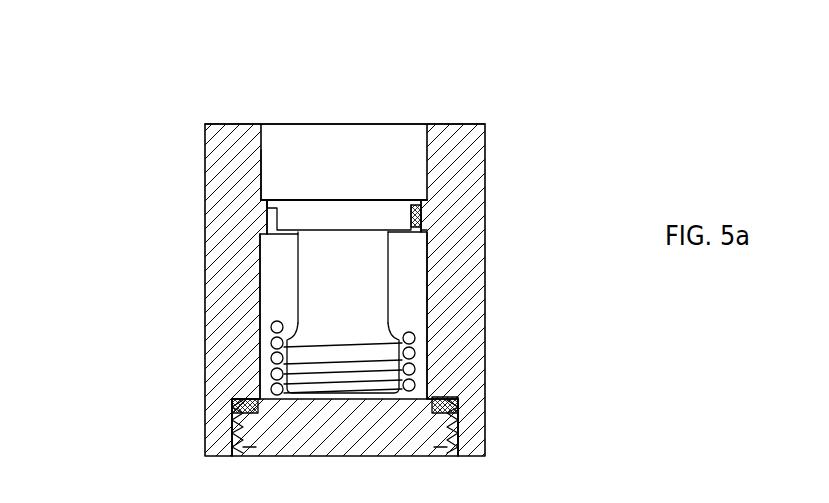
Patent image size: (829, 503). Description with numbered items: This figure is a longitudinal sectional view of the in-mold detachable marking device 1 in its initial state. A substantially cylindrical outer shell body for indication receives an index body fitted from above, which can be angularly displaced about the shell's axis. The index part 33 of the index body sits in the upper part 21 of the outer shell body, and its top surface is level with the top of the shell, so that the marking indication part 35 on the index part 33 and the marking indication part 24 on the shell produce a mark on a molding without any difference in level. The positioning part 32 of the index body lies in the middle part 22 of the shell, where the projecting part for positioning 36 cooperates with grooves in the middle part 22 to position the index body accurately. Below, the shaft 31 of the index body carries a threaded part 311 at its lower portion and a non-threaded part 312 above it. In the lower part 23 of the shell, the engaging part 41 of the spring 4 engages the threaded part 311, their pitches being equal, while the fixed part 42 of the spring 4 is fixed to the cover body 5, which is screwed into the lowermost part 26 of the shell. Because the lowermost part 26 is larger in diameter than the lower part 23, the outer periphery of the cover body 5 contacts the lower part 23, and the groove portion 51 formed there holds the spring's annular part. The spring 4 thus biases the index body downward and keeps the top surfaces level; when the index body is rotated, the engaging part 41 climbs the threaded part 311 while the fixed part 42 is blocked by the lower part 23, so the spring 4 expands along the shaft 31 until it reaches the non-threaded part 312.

The marking device 1 is at (328, 229).
The upper part 21 is at (428, 143).
The middle part 22 is at (428, 204).
The lower part 23 is at (428, 303).
The marking indication part 24 is at (448, 122).
The lowermost part 26 is at (458, 447).
The shaft 31 is at (296, 219).
The threaded part 311 is at (272, 383).
The non-threaded part 312 is at (317, 310).
The positioning part 32 is at (264, 211).
The index part 33 is at (258, 168).
The marking indication part 35 is at (293, 124).
The projecting part for positioning 36 is at (421, 210).
The spring 4 is at (455, 357).
The engaging part 41 is at (423, 350).
The fixed part 42 is at (460, 398).
The cover body 5 is at (243, 447).
The groove portion 51 is at (238, 404).